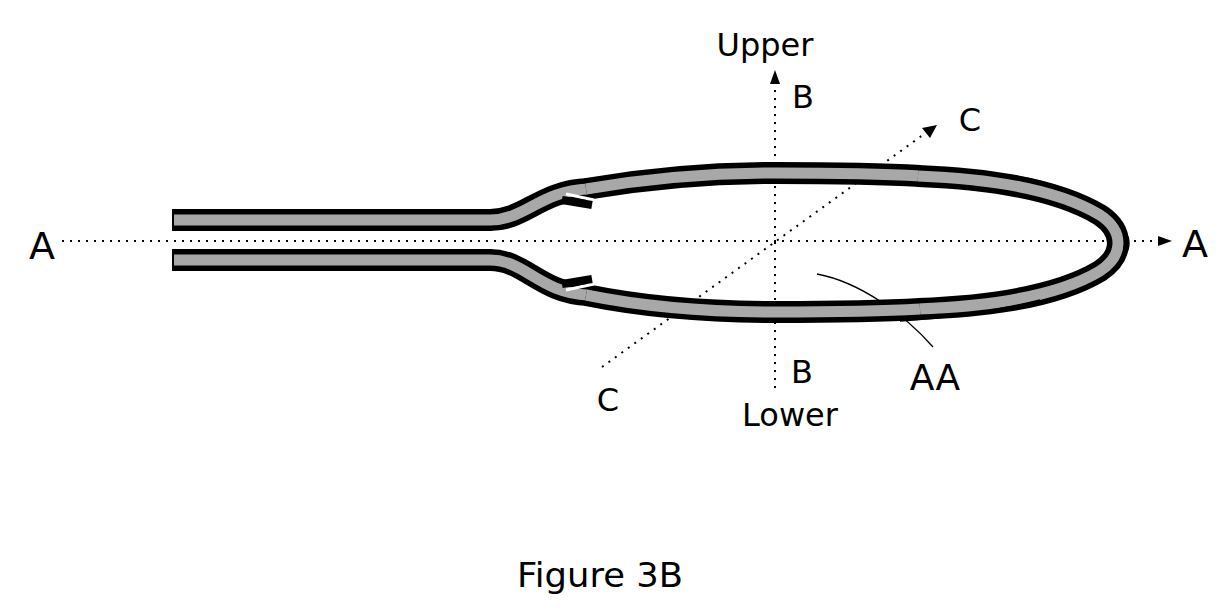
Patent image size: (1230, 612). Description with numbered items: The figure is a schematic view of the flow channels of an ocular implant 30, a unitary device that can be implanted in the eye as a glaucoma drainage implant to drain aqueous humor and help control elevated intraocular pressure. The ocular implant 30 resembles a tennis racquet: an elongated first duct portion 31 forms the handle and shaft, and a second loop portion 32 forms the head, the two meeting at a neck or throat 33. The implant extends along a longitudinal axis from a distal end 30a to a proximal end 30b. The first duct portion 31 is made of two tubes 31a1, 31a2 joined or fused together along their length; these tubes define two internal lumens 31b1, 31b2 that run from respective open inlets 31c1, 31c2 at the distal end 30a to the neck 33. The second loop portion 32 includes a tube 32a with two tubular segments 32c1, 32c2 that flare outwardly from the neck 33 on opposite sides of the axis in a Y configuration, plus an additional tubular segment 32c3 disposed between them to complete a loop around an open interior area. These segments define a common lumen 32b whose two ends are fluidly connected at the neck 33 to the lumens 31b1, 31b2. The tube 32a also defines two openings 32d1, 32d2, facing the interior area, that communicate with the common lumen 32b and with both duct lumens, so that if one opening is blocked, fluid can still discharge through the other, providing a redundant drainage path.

The ocular implant 30 is at (430, 132).
The distal end 30a is at (166, 284).
The proximal end 30b is at (1137, 250).
The first duct portion 31 is at (212, 180).
The first tube of the first duct portion 31a1 is at (290, 207).
The second tube of the first duct portion 31a2 is at (290, 272).
The first internal lumen 31b1 is at (350, 223).
The second internal lumen 31b2 is at (387, 270).
The first inlet 31c1 is at (172, 219).
The second inlet 31c2 is at (172, 262).
The second loop portion 32 is at (1064, 160).
The tube of the second loop portion 32a is at (1088, 198).
The common lumen 32b is at (970, 310).
The first tubular segment 32c1 is at (640, 165).
The second tubular segment 32c2 is at (697, 317).
The additional tubular segment 32c3 is at (1003, 180).
The first opening 32d1 is at (584, 200).
The second opening 32d2 is at (584, 277).
The neck 33 is at (492, 203).